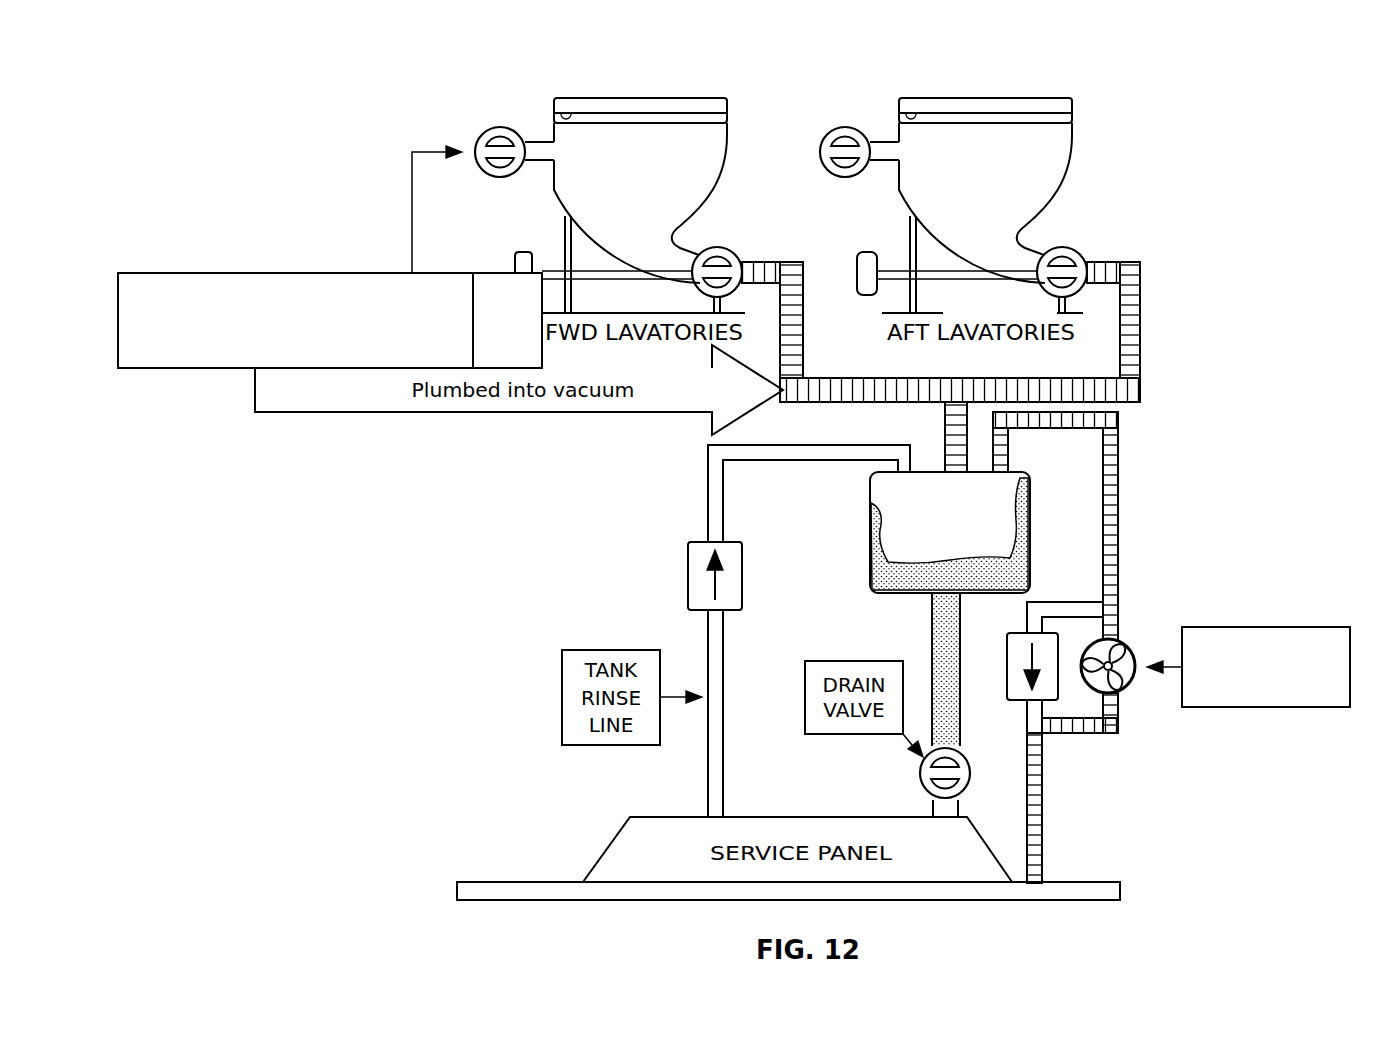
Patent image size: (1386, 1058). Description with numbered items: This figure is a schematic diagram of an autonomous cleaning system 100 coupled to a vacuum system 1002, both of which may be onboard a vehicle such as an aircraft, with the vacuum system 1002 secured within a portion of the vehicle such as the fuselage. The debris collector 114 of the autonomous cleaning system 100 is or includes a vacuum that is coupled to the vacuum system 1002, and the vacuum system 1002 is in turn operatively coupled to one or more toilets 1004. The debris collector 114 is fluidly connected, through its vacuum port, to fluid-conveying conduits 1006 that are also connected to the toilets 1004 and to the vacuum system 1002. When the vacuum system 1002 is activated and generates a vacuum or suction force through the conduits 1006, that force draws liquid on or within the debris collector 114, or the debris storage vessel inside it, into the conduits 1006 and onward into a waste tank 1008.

The autonomous cleaning system 100 is at (212, 273).
The debris collector 114 is at (485, 336).
The vacuum system 1002 is at (1226, 612).
The toilets 1004 is at (638, 98).
The fluid-conveying conduits 1006 is at (780, 262).
The waste tank 1008 is at (995, 502).